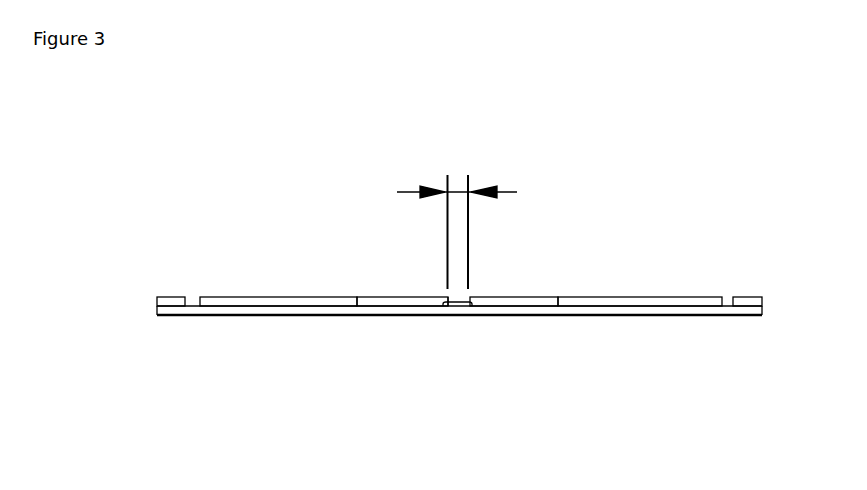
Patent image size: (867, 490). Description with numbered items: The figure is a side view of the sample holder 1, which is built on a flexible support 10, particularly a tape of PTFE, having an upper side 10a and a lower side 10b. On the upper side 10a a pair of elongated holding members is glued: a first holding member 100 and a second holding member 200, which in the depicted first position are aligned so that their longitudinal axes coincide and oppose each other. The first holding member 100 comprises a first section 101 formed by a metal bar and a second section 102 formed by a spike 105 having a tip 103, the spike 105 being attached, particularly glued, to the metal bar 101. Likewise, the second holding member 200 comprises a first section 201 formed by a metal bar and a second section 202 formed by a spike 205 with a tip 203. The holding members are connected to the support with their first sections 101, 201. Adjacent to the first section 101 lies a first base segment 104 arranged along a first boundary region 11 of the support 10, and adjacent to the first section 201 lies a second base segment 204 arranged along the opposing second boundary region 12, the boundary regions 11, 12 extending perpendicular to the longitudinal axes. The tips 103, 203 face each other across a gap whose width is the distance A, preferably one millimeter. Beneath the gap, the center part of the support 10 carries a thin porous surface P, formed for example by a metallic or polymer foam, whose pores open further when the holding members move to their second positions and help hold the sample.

The sample holder 1 is at (320, 255).
The flexible support 10 is at (460, 310).
The upper side 10a is at (597, 294).
The lower side 10b is at (597, 316).
The first boundary region 11 is at (752, 314).
The second boundary region 12 is at (166, 311).
The first holding member 100 is at (695, 294).
The first section of first holding member 101 is at (637, 296).
The second section of first holding member 102 is at (527, 296).
The tip of first holding member 103 is at (470, 296).
The first base segment 104 is at (750, 296).
The spike of first holding member 105 is at (473, 305).
The second holding member 200 is at (235, 293).
The first section of second holding member 201 is at (278, 296).
The second section of second holding member 202 is at (388, 296).
The tip of second holding member 203 is at (446, 296).
The second base segment 204 is at (173, 295).
The spike of second holding member 205 is at (428, 298).
The distance between tips A is at (457, 170).
The porous surface P is at (466, 308).